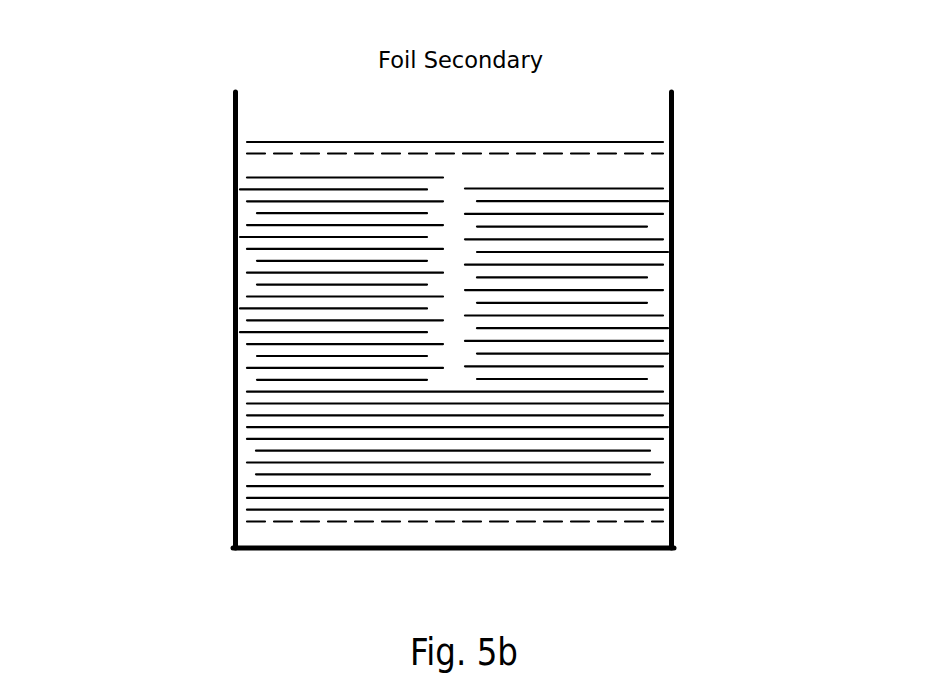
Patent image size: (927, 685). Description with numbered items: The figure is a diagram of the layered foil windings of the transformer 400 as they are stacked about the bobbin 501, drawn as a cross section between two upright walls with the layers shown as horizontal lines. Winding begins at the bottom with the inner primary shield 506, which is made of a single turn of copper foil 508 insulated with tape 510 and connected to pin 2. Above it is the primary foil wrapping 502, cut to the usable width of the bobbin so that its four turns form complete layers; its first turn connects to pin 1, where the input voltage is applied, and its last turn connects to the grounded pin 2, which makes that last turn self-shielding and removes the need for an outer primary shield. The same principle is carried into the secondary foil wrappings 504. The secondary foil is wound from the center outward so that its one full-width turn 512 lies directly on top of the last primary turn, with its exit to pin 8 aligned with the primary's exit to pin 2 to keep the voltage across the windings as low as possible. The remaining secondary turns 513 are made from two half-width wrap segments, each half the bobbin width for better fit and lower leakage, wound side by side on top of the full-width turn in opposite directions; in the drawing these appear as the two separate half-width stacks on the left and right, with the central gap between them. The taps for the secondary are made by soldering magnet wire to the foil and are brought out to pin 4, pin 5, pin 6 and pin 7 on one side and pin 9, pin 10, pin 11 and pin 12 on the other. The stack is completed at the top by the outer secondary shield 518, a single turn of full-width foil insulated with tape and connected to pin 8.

The transformer 400 is at (852, 145).
The bobbin 501 is at (265, 548).
The primary foil wrapping 502 is at (165, 497).
The secondary foil wrappings 504 is at (135, 395).
The inner primary shield 506 is at (617, 543).
The copper foil 508 is at (617, 498).
The tape 510 is at (272, 511).
The full-width secondary turn 512 is at (440, 375).
The remaining secondary turns 513 is at (203, 240).
The outer secondary shield 518 is at (347, 153).
The pin 1 is at (668, 498).
The pin 2 is at (668, 427).
The pin 4 is at (668, 354).
The pin 5 is at (668, 328).
The pin 6 is at (668, 252).
The pin 7 is at (668, 201).
The pin 8 is at (668, 154).
The pin 9 is at (240, 332).
The pin 10 is at (240, 308).
The pin 11 is at (240, 237).
The pin 12 is at (240, 189).